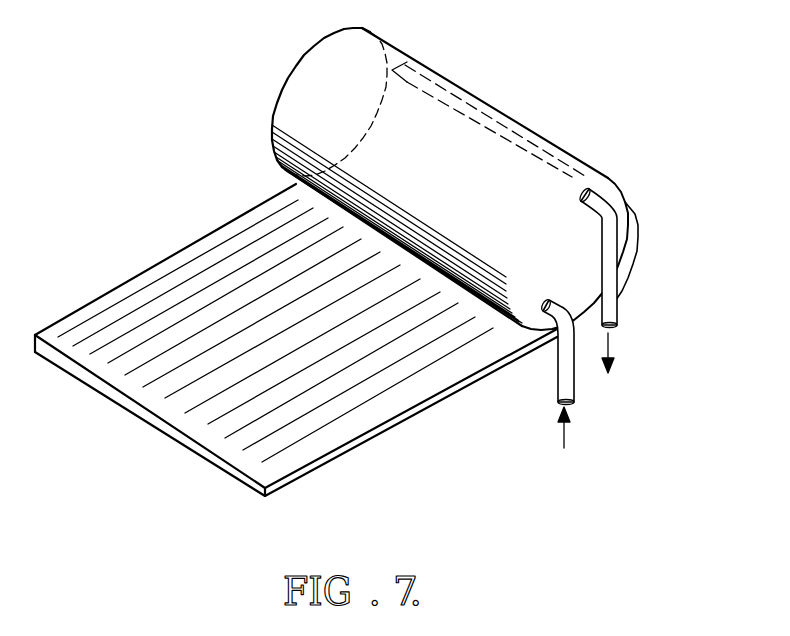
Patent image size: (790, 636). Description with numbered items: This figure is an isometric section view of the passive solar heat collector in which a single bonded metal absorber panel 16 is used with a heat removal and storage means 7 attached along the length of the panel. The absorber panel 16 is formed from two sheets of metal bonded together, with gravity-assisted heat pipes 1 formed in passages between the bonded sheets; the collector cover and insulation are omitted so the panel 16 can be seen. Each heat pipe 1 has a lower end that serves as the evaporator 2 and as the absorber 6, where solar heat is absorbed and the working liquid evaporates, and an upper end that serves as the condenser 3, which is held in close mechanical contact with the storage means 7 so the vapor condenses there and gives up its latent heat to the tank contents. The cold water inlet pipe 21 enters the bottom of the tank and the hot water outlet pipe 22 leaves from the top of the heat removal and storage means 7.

The heat pipe 1 is at (296, 350).
The evaporator 2 is at (296, 350).
The absorber 6 is at (398, 413).
The bonded metal absorber panel 16 is at (226, 407).
The heat removal and storage means 7 is at (453, 143).
The condenser 3 is at (625, 253).
The hot water outlet pipe 22 is at (600, 199).
The cold water inlet pipe 21 is at (570, 376).